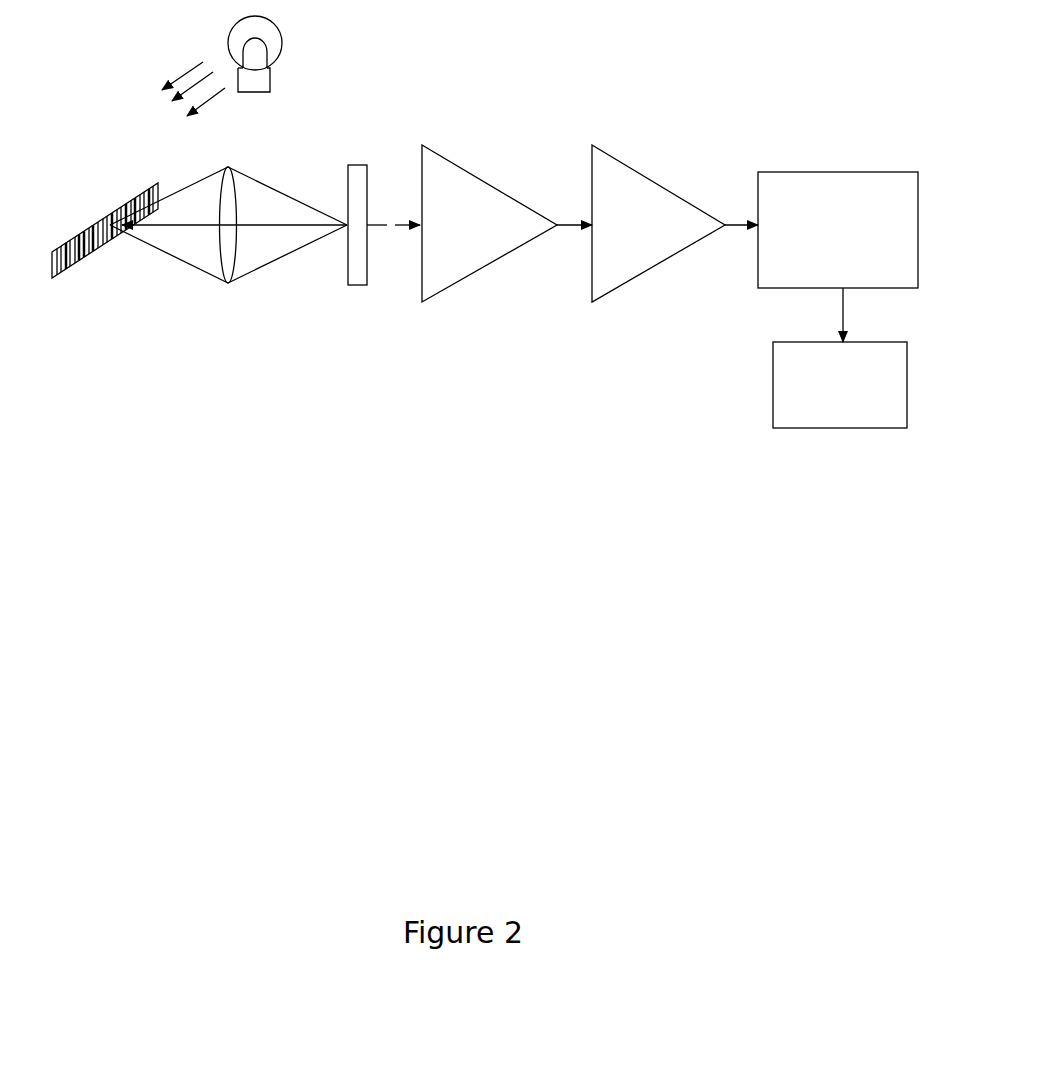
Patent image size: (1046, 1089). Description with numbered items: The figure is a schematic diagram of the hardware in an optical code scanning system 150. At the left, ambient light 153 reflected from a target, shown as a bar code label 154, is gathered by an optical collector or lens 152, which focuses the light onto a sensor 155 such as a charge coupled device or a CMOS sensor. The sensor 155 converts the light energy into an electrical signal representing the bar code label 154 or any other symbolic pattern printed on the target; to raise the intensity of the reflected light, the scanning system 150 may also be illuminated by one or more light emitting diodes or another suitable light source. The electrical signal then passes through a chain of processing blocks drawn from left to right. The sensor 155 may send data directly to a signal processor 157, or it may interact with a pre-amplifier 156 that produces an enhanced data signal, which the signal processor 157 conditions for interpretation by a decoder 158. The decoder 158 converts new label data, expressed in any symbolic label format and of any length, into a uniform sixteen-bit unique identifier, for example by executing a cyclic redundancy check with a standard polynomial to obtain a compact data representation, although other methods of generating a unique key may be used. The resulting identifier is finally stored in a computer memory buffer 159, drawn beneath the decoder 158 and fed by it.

The scanning system 150 is at (645, 51).
The lens 152 is at (228, 285).
The ambient light 153 is at (213, 66).
The bar code label 154 is at (63, 243).
The sensor 155 is at (358, 165).
The pre-amplifier 156 is at (447, 268).
The signal processor 157 is at (640, 185).
The decoder 158 is at (818, 197).
The buffer 159 is at (800, 423).